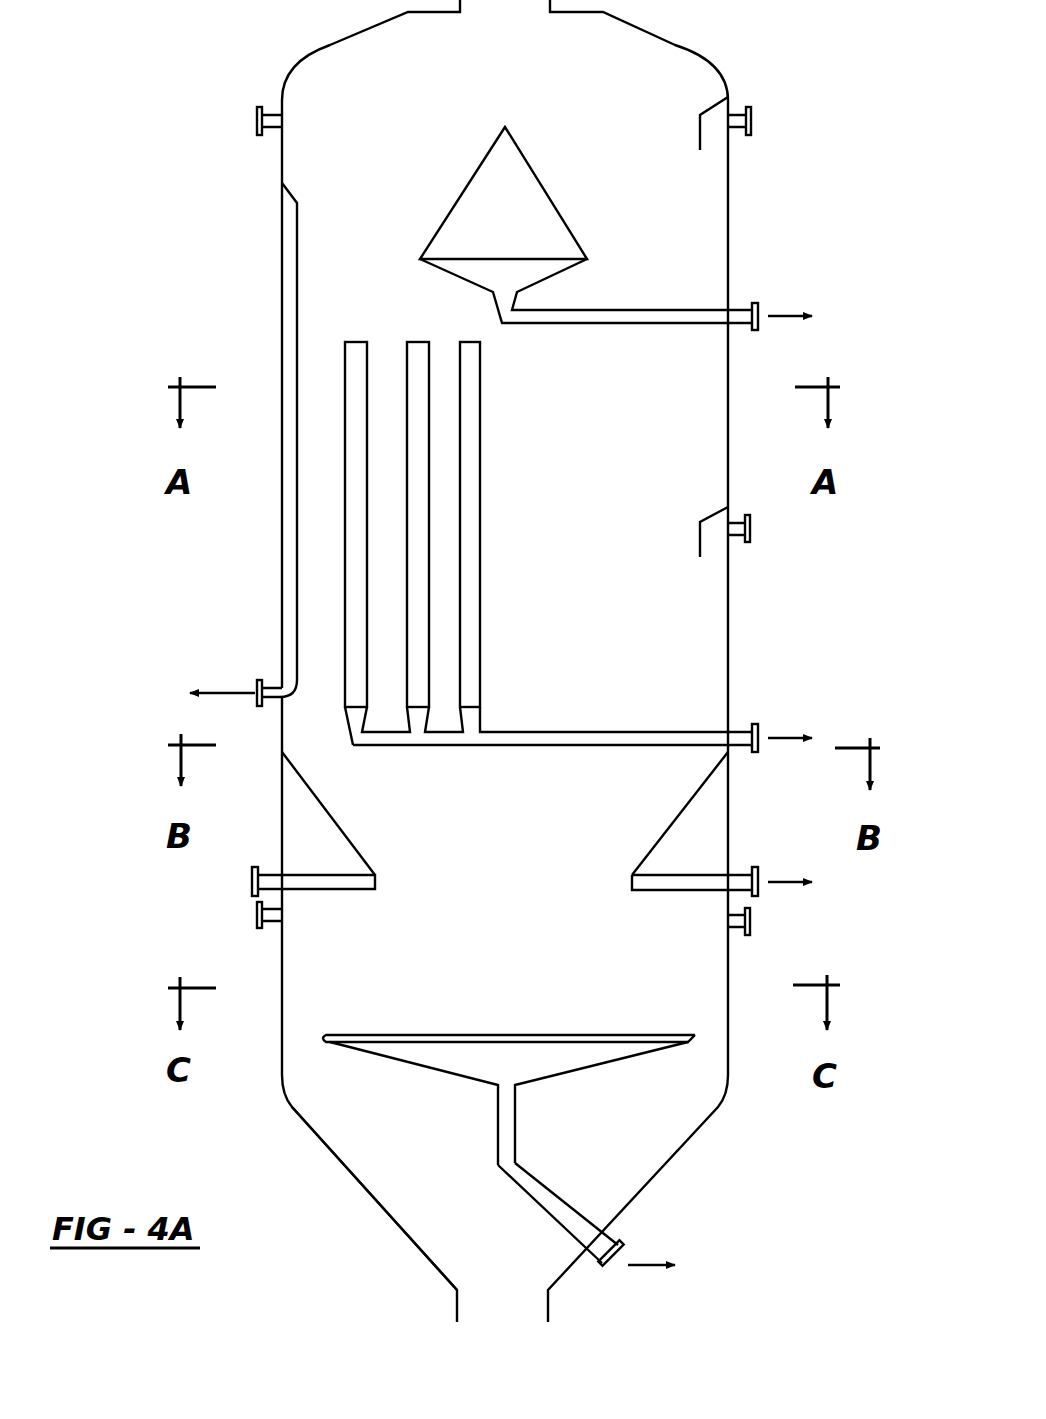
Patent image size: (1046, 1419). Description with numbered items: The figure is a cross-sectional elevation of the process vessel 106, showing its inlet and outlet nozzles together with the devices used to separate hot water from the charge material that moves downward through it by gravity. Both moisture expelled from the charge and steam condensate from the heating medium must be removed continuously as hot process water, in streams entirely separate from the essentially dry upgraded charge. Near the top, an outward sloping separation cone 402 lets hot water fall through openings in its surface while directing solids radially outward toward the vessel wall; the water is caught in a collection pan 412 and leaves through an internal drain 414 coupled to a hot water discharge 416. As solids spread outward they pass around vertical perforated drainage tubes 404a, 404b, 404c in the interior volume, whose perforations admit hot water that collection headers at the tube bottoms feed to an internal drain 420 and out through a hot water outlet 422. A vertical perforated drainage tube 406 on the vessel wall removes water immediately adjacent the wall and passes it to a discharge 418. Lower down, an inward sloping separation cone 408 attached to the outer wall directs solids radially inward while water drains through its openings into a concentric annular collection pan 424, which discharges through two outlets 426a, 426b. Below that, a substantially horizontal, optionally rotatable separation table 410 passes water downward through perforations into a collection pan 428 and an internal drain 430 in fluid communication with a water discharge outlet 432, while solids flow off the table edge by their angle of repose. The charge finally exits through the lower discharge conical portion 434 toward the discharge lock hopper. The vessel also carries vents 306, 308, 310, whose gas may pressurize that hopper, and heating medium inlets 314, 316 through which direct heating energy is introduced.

The process vessel 106 is at (728, 632).
The vent 306 is at (748, 106).
The vent 308 is at (735, 540).
The vent 310 is at (735, 930).
The heating medium inlet 314 is at (262, 104).
The heating medium inlet 316 is at (266, 926).
The outward sloping separation cone 402 is at (460, 190).
The vertical perforated drainage tube 404a is at (367, 465).
The vertical perforated drainage tube 404b is at (429, 522).
The vertical perforated drainage tube 404c is at (480, 610).
The vertical perforated drainage tube 406 is at (297, 272).
The inward sloping separation cone 408 is at (660, 842).
The horizontal separation table 410 is at (425, 1038).
The collection pan 412 is at (490, 270).
The internal drain 414 is at (655, 310).
The hot water discharge 416 is at (748, 303).
The hot water discharge 418 is at (268, 678).
The internal drain 420 is at (625, 730).
The hot water outlet 422 is at (740, 748).
The concentric annular collection pan 424 is at (663, 882).
The outlet 426a is at (740, 866).
The outlet 426b is at (265, 866).
The collection pan 428 is at (395, 1060).
The internal drain 430 is at (555, 1218).
The water discharge outlet 432 is at (612, 1240).
The lower discharge conical portion 434 is at (398, 1198).